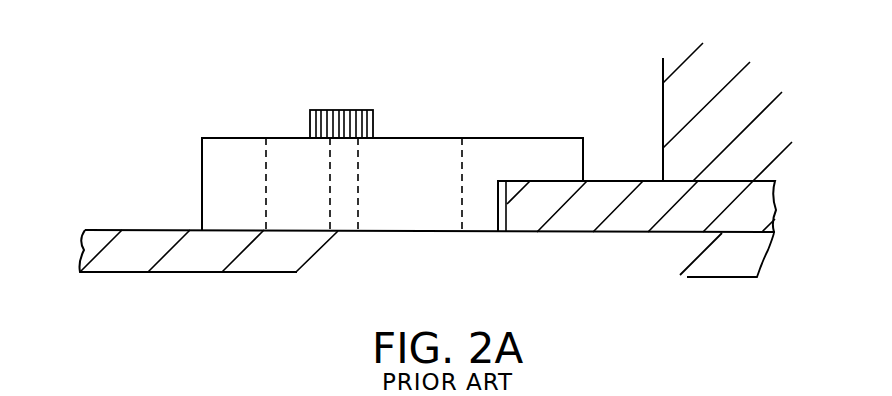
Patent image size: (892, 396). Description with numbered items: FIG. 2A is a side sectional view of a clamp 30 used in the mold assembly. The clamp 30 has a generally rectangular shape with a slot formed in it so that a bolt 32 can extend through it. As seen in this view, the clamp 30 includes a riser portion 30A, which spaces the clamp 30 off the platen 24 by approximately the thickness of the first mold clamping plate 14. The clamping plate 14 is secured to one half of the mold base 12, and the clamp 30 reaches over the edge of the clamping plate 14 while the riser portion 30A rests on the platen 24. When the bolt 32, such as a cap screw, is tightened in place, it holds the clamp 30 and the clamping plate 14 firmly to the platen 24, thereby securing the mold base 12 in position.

The mold base 12 is at (722, 83).
The first mold clamping plate 14 is at (614, 180).
The platen 24 is at (148, 229).
The clamp 30 is at (478, 137).
The riser portion 30A is at (202, 203).
The bolt 32 is at (368, 112).